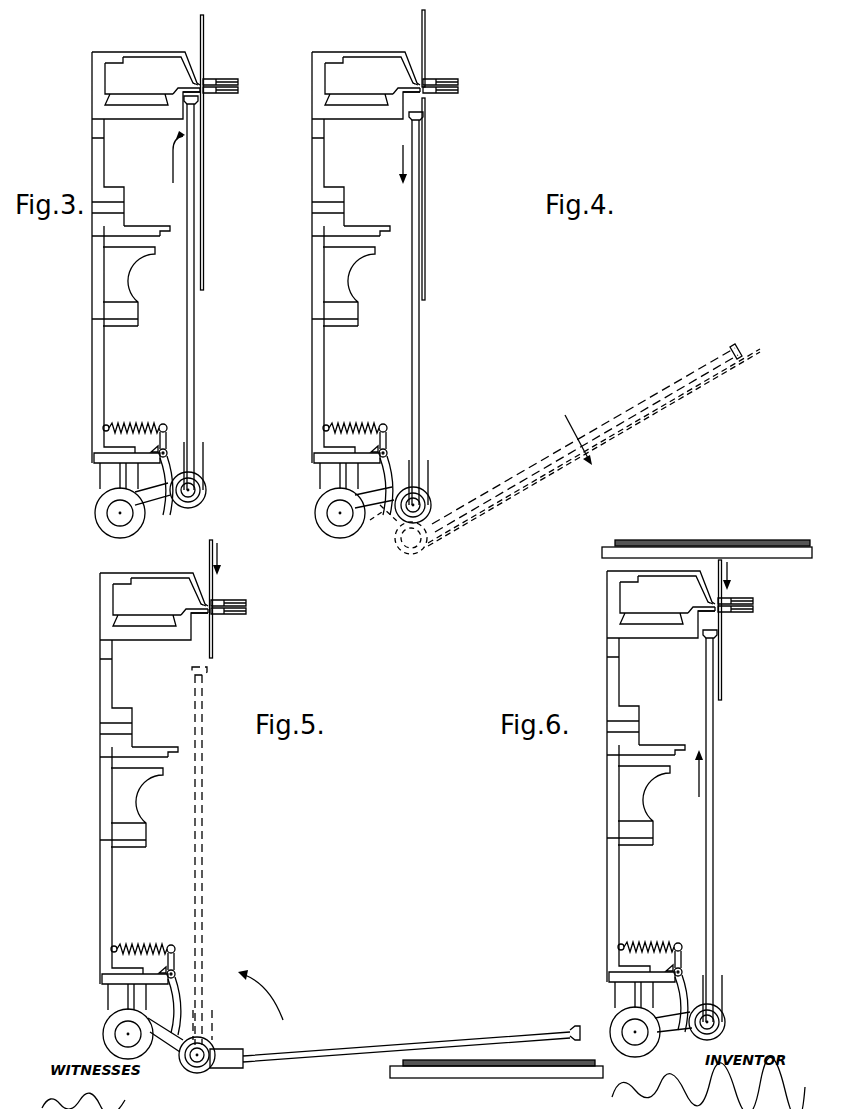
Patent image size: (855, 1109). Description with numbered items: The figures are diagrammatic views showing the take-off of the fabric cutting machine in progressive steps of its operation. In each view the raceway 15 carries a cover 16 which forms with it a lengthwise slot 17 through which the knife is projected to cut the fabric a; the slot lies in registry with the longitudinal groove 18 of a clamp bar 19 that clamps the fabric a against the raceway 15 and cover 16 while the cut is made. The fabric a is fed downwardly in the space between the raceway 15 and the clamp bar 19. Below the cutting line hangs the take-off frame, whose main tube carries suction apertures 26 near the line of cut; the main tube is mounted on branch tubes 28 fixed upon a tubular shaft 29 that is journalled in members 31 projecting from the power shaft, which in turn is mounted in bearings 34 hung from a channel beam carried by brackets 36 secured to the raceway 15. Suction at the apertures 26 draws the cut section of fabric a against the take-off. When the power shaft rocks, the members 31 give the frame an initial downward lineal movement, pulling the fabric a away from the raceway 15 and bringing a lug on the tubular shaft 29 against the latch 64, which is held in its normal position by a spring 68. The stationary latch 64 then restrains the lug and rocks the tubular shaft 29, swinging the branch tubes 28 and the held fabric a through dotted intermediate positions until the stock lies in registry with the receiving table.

In FIG. 3, the raceway 15 is at (128, 257).
In FIG. 4, the raceway 15 is at (349, 257).
In FIG. 5, the raceway 15 is at (132, 778).
In FIG. 6, the raceway 15 is at (641, 776).
In FIG. 3, the cover 16 is at (159, 55).
In FIG. 4, the cover 16 is at (379, 55).
In FIG. 5, the cover 16 is at (167, 591).
In FIG. 6, the cover 16 is at (674, 587).
In FIG. 3, the slot 17 is at (177, 80).
In FIG. 4, the slot 17 is at (396, 79).
In FIG. 5, the slot 17 is at (185, 598).
In FIG. 6, the slot 17 is at (694, 593).
In FIG. 3, the longitudinal groove 18 is at (225, 63).
In FIG. 4, the longitudinal groove 18 is at (446, 63).
In FIG. 5, the longitudinal groove 18 is at (235, 587).
In FIG. 6, the longitudinal groove 18 is at (745, 584).
In FIG. 3, the clamp bar 19 is at (234, 81).
In FIG. 4, the clamp bar 19 is at (457, 97).
In FIG. 5, the clamp bar 19 is at (242, 619).
In FIG. 6, the clamp bar 19 is at (751, 604).
In FIG. 3, the suction apertures 26 is at (210, 107).
In FIG. 4, the suction apertures 26 is at (416, 116).
In FIG. 5, the suction apertures 26 is at (589, 1042).
In FIG. 6, the suction apertures 26 is at (710, 634).
In FIG. 3, the branch tubes 28 is at (211, 297).
In FIG. 4, the branch tubes 28 is at (575, 326).
In FIG. 5, the branch tubes 28 is at (381, 875).
In FIG. 6, the branch tubes 28 is at (725, 830).
In FIG. 3, the tubular shaft 29 is at (204, 490).
In FIG. 4, the tubular shaft 29 is at (429, 517).
In FIG. 5, the tubular shaft 29 is at (205, 1068).
In FIG. 6, the tubular shaft 29 is at (729, 1024).
In FIG. 3, the members 31 is at (152, 515).
In FIG. 4, the members 31 is at (372, 522).
In FIG. 5, the members 31 is at (165, 1048).
In FIG. 6, the members 31 is at (673, 1038).
In FIG. 3, the bearings 34 is at (113, 495).
In FIG. 4, the bearings 34 is at (333, 495).
In FIG. 5, the bearings 34 is at (117, 1016).
In FIG. 6, the bearings 34 is at (622, 1014).
In FIG. 3, the brackets 36 is at (113, 339).
In FIG. 4, the brackets 36 is at (333, 339).
In FIG. 5, the brackets 36 is at (117, 860).
In FIG. 6, the brackets 36 is at (626, 858).
In FIG. 3, the latch 64 is at (180, 494).
In FIG. 4, the latch 64 is at (394, 485).
In FIG. 5, the latch 64 is at (202, 1006).
In FIG. 6, the latch 64 is at (717, 1002).
In FIG. 3, the spring 68 is at (135, 426).
In FIG. 4, the spring 68 is at (355, 426).
In FIG. 5, the spring 68 is at (143, 946).
In FIG. 6, the spring 68 is at (650, 944).
In FIG. 3, the fabric a is at (216, 152).
In FIG. 4, the fabric a is at (591, 278).
In FIG. 5, the fabric a is at (407, 809).
In FIG. 6, the fabric a is at (707, 605).